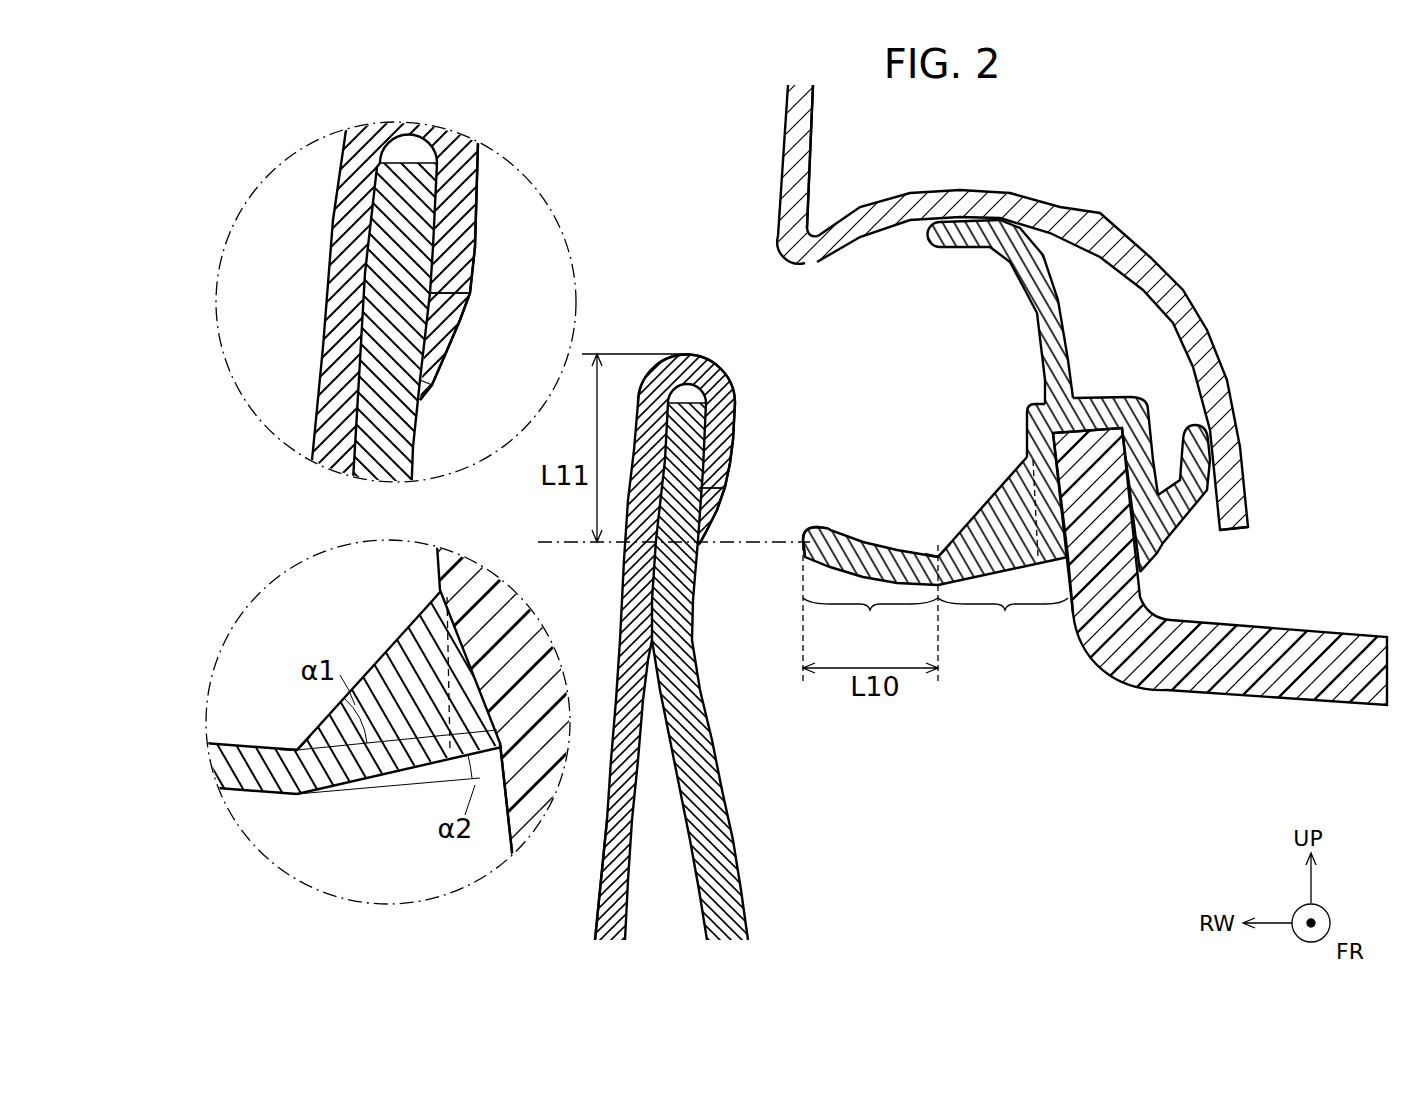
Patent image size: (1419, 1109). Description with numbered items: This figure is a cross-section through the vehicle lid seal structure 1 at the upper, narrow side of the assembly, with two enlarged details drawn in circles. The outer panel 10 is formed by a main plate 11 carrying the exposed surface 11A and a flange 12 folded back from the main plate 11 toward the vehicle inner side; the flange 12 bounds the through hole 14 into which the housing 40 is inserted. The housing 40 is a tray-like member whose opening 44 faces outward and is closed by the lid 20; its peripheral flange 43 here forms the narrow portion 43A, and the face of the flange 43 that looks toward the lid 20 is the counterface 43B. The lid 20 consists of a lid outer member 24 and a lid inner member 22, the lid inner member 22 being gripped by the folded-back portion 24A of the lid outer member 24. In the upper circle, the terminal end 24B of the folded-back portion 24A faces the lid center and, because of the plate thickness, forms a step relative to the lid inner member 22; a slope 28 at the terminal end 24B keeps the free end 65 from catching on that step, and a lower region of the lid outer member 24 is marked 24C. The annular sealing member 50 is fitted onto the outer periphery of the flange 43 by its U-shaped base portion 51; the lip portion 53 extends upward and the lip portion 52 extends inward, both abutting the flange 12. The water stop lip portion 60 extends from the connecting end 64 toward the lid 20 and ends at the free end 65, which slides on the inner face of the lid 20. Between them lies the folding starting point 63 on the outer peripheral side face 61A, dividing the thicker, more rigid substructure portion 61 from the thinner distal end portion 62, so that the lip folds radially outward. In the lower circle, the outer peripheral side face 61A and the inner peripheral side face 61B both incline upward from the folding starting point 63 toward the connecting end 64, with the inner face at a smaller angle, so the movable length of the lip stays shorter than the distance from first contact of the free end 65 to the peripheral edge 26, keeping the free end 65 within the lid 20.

The vehicle lid seal structure 1 is at (714, 271).
The outer panel 10 is at (770, 118).
The main plate 11 is at (805, 133).
The exposed surface 11A is at (785, 152).
The flange 12 is at (1090, 228).
The through hole 14 is at (1233, 557).
The lid 20 is at (767, 770).
The lid inner member 22 is at (717, 878).
The lid outer member 24 is at (625, 678).
The folded-back portion 24A is at (723, 447).
The terminal end 24B is at (447, 323).
The lower end portion of seal body 24C is at (600, 862).
The peripheral edge 26 is at (690, 357).
The slope 28 is at (433, 347).
The housing 40 is at (1146, 711).
The flange 43 is at (1115, 575).
The narrow portion 43A is at (1096, 500).
The counterface 43B is at (1072, 595).
The opening 44 is at (1178, 795).
The annular sealing member 50 is at (1106, 334).
The base portion 51 is at (1107, 400).
The lip portion 52 is at (1190, 427).
The lip portion 53 is at (1045, 248).
The lip portion 60 is at (928, 433).
The substructure portion 61 is at (290, 628).
The outer peripheral side face 61A is at (410, 624).
The inner peripheral side face 61B is at (402, 771).
The distal end portion 62 is at (187, 690).
The folding starting point 63 is at (937, 553).
The connecting end 64 is at (1020, 497).
The free end 65 is at (807, 530).